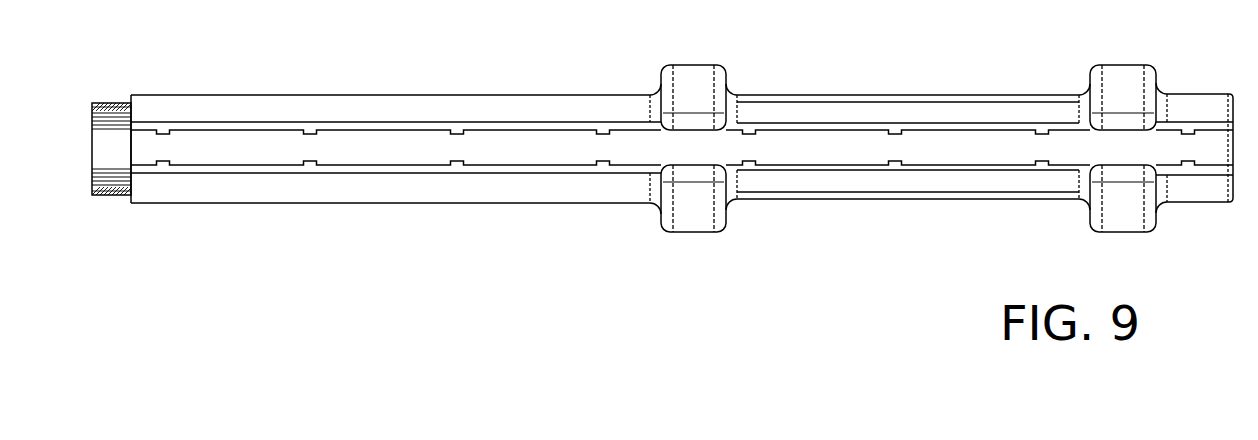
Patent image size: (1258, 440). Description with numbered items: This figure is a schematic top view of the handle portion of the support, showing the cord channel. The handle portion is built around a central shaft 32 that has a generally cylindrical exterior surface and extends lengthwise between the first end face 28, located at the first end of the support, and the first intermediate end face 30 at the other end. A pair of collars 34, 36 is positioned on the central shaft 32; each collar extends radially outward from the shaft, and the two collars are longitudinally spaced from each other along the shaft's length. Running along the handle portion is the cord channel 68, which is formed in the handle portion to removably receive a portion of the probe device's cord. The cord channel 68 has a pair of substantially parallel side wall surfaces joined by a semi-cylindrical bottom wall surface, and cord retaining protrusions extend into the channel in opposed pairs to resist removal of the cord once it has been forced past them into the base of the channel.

The first end face 28 is at (1235, 187).
The first intermediate end face 30 is at (87, 172).
The central shaft 32 is at (267, 97).
The collar 34 is at (1118, 65).
The collar 36 is at (688, 63).
The cord channel 68 is at (392, 148).